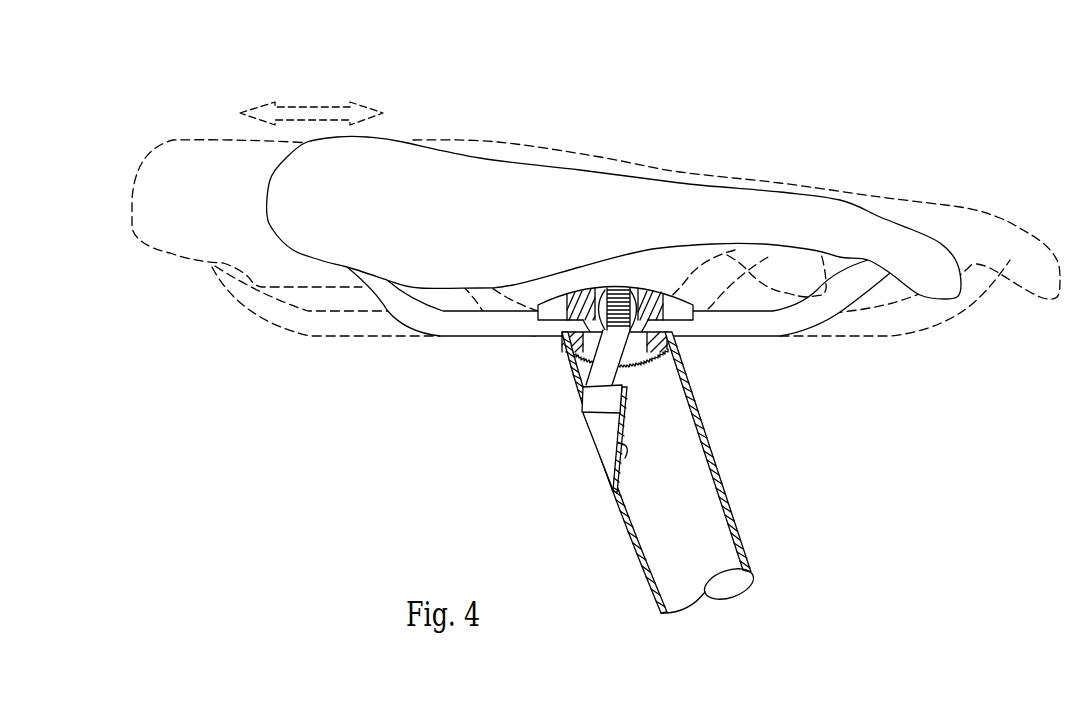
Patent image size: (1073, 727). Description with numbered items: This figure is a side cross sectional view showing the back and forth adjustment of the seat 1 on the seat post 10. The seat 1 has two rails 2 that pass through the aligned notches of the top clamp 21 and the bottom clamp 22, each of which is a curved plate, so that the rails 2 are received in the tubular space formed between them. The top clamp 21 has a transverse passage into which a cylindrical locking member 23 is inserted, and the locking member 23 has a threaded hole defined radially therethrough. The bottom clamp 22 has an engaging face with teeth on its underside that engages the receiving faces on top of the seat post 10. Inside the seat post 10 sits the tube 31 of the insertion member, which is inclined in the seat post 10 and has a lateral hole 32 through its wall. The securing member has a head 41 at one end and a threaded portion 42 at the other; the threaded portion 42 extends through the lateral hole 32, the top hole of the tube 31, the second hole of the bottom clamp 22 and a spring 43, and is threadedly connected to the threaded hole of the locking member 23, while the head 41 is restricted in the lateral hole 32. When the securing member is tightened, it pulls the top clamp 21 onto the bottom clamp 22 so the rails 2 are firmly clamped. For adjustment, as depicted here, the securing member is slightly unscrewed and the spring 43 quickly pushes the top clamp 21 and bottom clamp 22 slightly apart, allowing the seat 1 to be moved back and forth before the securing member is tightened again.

The seat 1 is at (166, 131).
The rails 2 is at (322, 337).
The seat post 10 is at (728, 508).
The top clamp 21 is at (653, 272).
The bottom clamp 22 is at (655, 358).
The locking member 23 is at (598, 300).
The tube 31 is at (620, 452).
The lateral hole 32 is at (602, 432).
The head 41 is at (598, 410).
The threaded portion 42 is at (616, 288).
The spring 43 is at (575, 350).